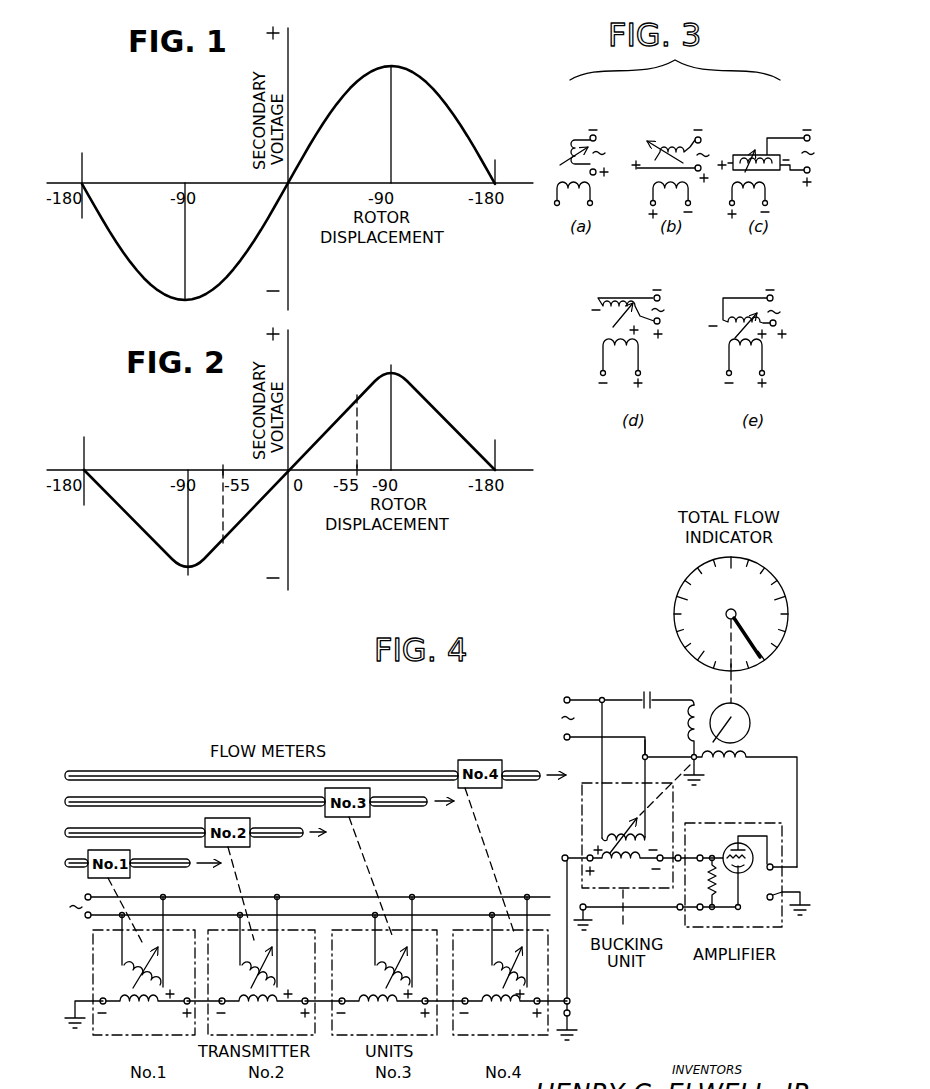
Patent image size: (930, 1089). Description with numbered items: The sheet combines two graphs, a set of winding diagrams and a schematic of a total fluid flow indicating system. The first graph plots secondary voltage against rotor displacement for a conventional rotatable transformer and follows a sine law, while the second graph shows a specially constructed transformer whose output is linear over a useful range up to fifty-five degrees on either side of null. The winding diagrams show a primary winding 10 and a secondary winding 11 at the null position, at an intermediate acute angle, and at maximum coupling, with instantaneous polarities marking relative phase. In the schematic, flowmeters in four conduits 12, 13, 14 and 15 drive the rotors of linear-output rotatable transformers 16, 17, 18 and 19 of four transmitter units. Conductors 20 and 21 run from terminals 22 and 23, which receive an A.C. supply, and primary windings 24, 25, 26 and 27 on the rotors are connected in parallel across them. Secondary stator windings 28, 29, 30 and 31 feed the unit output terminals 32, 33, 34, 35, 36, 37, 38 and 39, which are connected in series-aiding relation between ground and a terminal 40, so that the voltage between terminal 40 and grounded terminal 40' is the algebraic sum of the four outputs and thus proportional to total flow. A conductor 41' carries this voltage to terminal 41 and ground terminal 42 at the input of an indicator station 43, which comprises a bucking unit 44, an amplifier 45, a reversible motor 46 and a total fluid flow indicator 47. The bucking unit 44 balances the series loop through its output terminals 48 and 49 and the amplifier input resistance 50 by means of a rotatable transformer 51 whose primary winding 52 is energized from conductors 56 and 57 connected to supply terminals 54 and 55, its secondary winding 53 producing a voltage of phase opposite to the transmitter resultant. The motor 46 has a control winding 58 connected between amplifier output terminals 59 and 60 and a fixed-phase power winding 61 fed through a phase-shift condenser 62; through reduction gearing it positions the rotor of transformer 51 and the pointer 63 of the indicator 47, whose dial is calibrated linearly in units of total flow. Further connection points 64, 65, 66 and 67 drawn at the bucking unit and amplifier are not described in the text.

In FIG. 3, the primary winding 10 is at (572, 150).
In FIG. 3, the secondary winding 11 is at (573, 188).
In FIG. 4, the conduit 12 is at (83, 859).
In FIG. 4, the conduit 13 is at (140, 828).
In FIG. 4, the conduit 14 is at (222, 797).
In FIG. 4, the conduit 15 is at (383, 771).
In FIG. 4, the rotatable transformer 16 is at (127, 977).
In FIG. 4, the rotatable transformer 17 is at (246, 977).
In FIG. 4, the rotatable transformer 18 is at (366, 977).
In FIG. 4, the rotatable transformer 19 is at (489, 977).
In FIG. 4, the conductor 20 is at (320, 914).
In FIG. 4, the conductor 21 is at (285, 897).
In FIG. 4, the terminal 22 is at (85, 917).
In FIG. 4, the terminal 23 is at (85, 896).
In FIG. 4, the primary winding 24 is at (125, 969).
In FIG. 4, the primary winding 25 is at (243, 969).
In FIG. 4, the primary winding 26 is at (378, 969).
In FIG. 4, the primary winding 27 is at (495, 969).
In FIG. 4, the secondary stator winding 28 is at (135, 1003).
In FIG. 4, the secondary stator winding 29 is at (254, 1003).
In FIG. 4, the secondary stator winding 30 is at (374, 1003).
In FIG. 4, the secondary stator winding 31 is at (497, 1003).
In FIG. 4, the unit output terminal 32 is at (107, 1004).
In FIG. 4, the unit output terminal 33 is at (186, 998).
In FIG. 4, the unit output terminal 34 is at (226, 1004).
In FIG. 4, the unit output terminal 35 is at (304, 998).
In FIG. 4, the unit output terminal 36 is at (346, 1004).
In FIG. 4, the unit output terminal 37 is at (424, 998).
In FIG. 4, the unit output terminal 38 is at (469, 1004).
In FIG. 4, the unit output terminal 39 is at (536, 998).
In FIG. 4, the terminal 40 is at (584, 993).
In FIG. 4, the grounded terminal 40' is at (585, 1022).
In FIG. 4, the terminal 41 is at (566, 847).
In FIG. 4, the conductor 41' is at (586, 929).
In FIG. 4, the ground terminal 42 is at (587, 911).
In FIG. 4, the indicator station 43 is at (612, 673).
In FIG. 4, the bucking unit 44 is at (582, 809).
In FIG. 4, the amplifier 45 is at (760, 826).
In FIG. 4, the reversible motor 46 is at (751, 723).
In FIG. 4, the total fluid flow indicator 47 is at (676, 610).
In FIG. 4, the bucking unit output terminal 48 is at (599, 866).
In FIG. 4, the bucking unit output terminal 49 is at (662, 871).
In FIG. 4, the resistance 50 is at (740, 890).
In FIG. 4, the rotatable transformer 51 is at (594, 838).
In FIG. 4, the primary winding 52 is at (638, 835).
In FIG. 4, the secondary winding 53 is at (622, 861).
In FIG. 4, the terminal 54 is at (570, 740).
In FIG. 4, the terminal 55 is at (569, 698).
In FIG. 4, the conductor 56 is at (617, 736).
In FIG. 4, the conductor 57 is at (618, 699).
In FIG. 4, the control winding 58 is at (733, 761).
In FIG. 4, the amplifier output terminal 59 is at (777, 854).
In FIG. 4, the amplifier output terminal 60 is at (780, 912).
In FIG. 4, the fixed-phase power winding 61 is at (688, 722).
In FIG. 4, the phase-shift condenser 62 is at (652, 699).
In FIG. 4, the pointer 63 is at (771, 643).
In FIG. 4, the junction 64 is at (679, 855).
In FIG. 4, the conductor 65 is at (679, 909).
In FIG. 4, the amplifier input terminal 66 is at (701, 855).
In FIG. 4, the amplifier input terminal 67 is at (709, 918).